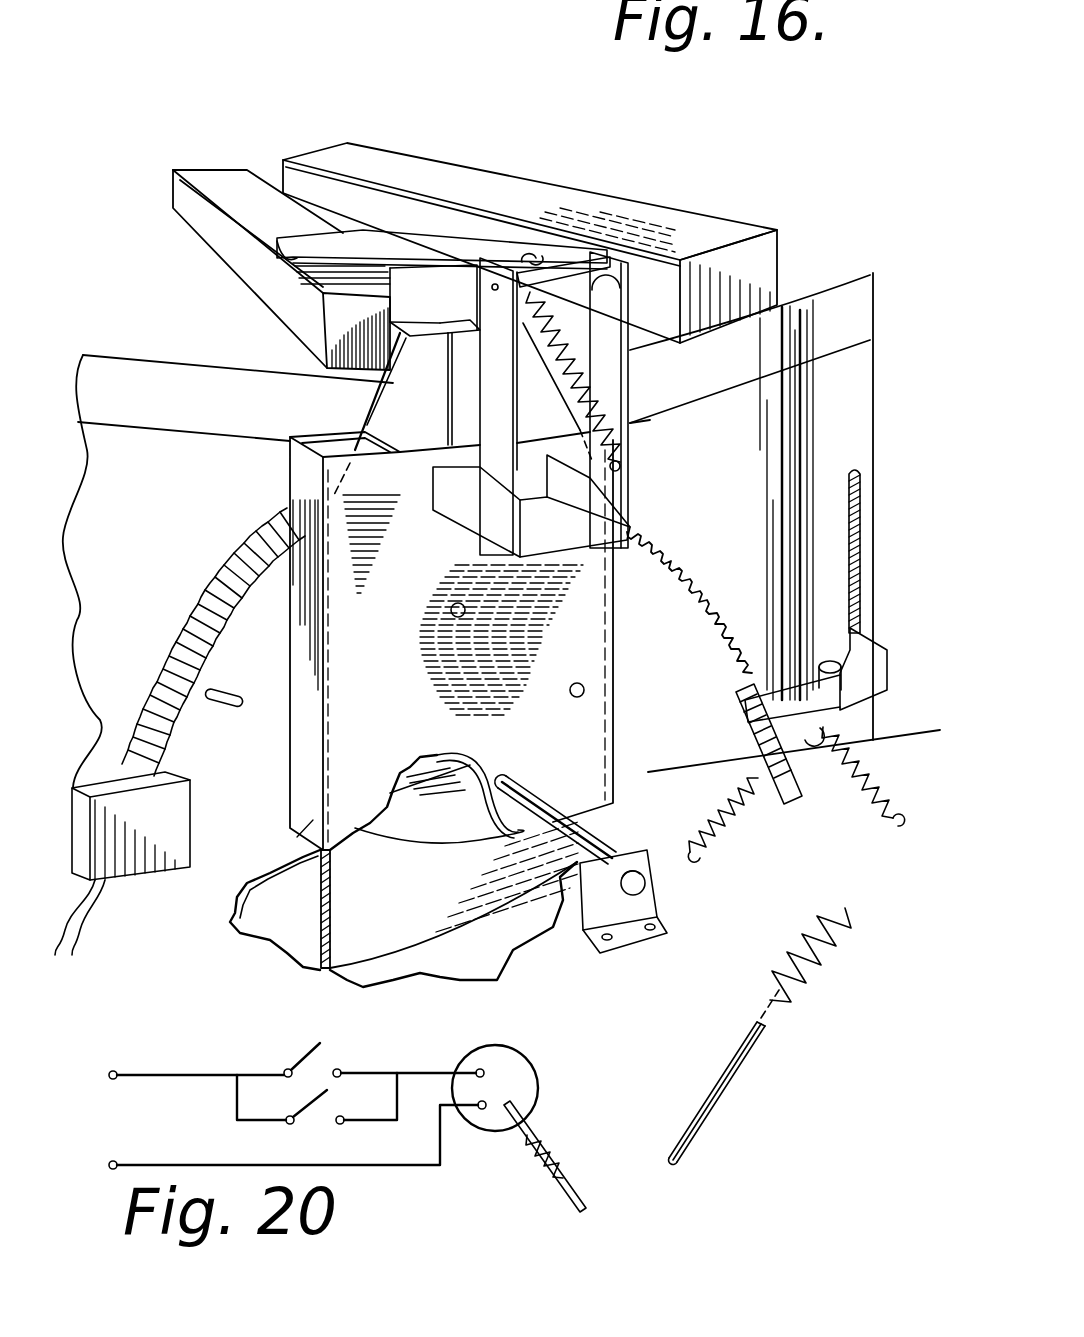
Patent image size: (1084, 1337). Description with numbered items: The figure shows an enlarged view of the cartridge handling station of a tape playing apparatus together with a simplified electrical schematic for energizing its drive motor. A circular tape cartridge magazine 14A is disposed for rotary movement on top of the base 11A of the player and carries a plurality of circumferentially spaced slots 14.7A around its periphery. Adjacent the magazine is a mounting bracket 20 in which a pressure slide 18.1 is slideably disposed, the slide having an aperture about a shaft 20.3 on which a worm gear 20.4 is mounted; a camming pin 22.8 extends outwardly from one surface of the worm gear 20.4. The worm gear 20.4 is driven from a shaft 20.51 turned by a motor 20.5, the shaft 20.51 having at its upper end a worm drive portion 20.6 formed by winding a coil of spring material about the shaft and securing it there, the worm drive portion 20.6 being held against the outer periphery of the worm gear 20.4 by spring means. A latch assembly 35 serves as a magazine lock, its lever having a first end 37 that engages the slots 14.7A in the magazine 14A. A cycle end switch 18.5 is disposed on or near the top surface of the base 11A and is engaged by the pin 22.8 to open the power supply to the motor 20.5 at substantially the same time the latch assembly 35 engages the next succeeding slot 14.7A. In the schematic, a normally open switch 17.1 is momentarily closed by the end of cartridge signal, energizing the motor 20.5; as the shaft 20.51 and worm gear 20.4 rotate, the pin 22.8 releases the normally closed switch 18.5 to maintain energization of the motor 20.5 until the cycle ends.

In FIG. 16, the pressure slide 18.1 is at (385, 398).
In FIG. 16, the circular tape cartridge magazine 14A is at (840, 383).
In FIG. 16, the circumferentially spaced slots 14.7A is at (858, 500).
In FIG. 16, the first end of latch lever 37 is at (862, 648).
In FIG. 16, the latch assembly 35 is at (847, 705).
In FIG. 16, the worm gear 20.4 is at (688, 545).
In FIG. 16, the worm drive portion 20.6 is at (757, 731).
In FIG. 20, the worm drive portion 20.6 is at (537, 1170).
In FIG. 16, the shaft 20.3 is at (645, 888).
In FIG. 16, the shaft 20.51 is at (727, 1092).
In FIG. 16, the camming pin 22.8 is at (247, 710).
In FIG. 16, the mounting bracket 20 is at (303, 840).
In FIG. 16, the cycle end switch 18.5 is at (133, 875).
In FIG. 20, the cycle end switch 18.5 is at (313, 1117).
In FIG. 16, the base 11A is at (403, 870).
In FIG. 20, the normally open switch 17.1 is at (297, 1063).
In FIG. 20, the motor 20.5 is at (527, 1067).